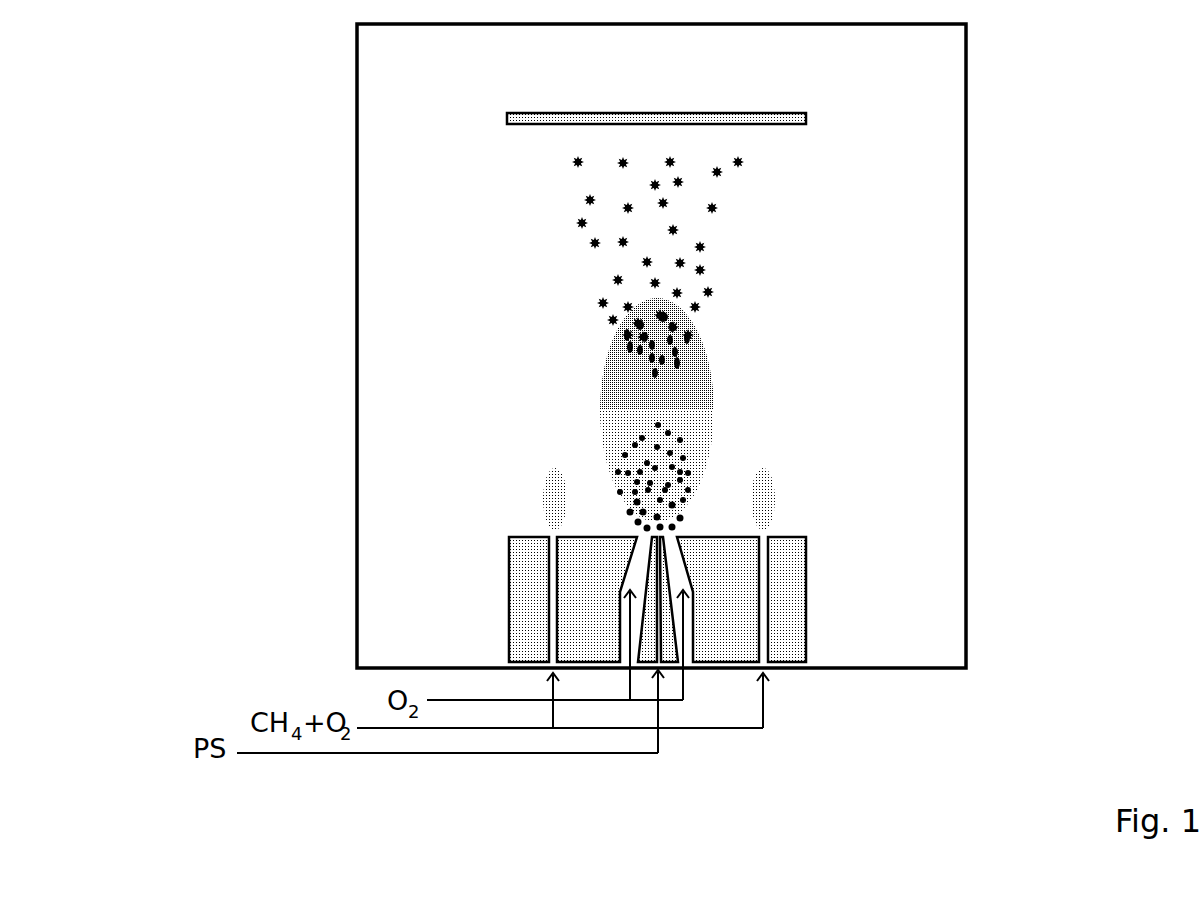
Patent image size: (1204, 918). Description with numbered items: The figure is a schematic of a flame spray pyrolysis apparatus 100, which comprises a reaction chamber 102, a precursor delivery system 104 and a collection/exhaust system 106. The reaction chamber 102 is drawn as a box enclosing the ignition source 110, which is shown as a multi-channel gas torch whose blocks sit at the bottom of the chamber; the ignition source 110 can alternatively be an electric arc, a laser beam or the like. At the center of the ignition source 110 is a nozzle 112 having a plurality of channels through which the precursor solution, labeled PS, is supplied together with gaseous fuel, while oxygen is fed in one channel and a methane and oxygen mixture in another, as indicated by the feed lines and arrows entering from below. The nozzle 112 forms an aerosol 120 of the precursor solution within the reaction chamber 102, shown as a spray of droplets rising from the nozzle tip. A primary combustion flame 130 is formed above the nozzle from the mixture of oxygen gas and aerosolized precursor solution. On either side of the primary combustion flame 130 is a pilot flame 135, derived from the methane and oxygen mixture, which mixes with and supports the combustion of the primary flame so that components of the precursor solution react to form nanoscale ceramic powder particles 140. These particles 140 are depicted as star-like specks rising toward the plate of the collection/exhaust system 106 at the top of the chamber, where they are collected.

The apparatus 100 is at (314, 93).
The reaction chamber 102 is at (357, 388).
The precursor delivery system 104 is at (493, 518).
The collection/exhaust system 106 is at (790, 118).
The ignition source 110 is at (665, 620).
The nozzle 112 is at (670, 540).
The aerosol 120 is at (660, 463).
The primary combustion flame 130 is at (630, 390).
The pilot flame 135 is at (550, 492).
The nanoscale ceramic powder particles 140 is at (655, 185).